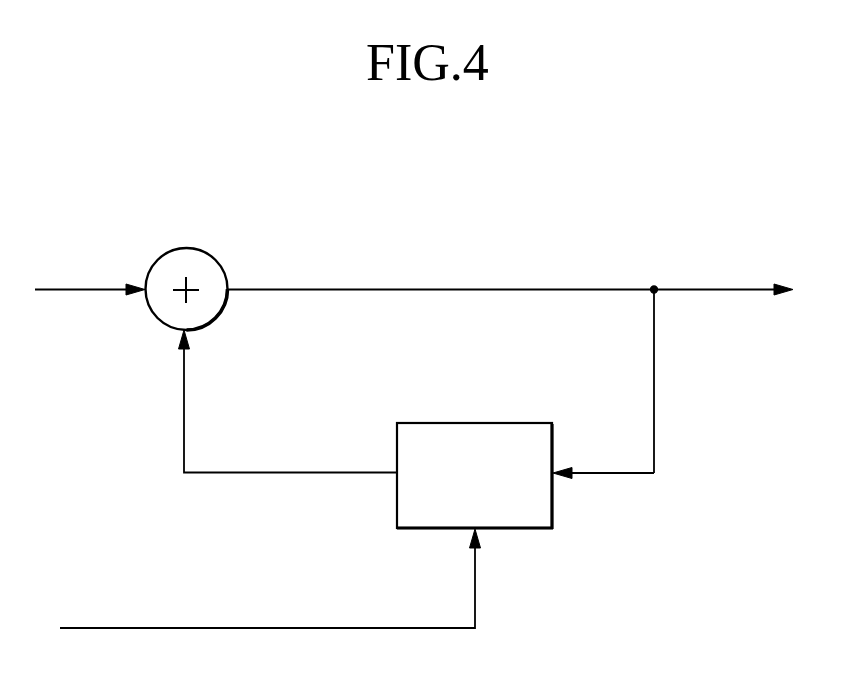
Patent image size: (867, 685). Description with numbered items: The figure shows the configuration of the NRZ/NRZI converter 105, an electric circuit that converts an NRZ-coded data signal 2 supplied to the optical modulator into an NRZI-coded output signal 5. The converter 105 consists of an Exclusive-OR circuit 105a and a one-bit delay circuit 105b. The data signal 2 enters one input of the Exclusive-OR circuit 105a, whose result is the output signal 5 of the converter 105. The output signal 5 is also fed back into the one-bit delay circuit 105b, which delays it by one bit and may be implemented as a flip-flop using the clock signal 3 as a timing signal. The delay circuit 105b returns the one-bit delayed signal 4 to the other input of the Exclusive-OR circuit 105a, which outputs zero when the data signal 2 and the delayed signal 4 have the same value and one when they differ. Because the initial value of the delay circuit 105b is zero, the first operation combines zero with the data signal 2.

The NRZ/NRZI converter 105 is at (157, 178).
The Exclusive-OR circuit 105a is at (222, 263).
The 1-bit delay circuit 105b is at (478, 423).
The data signal 2 is at (82, 289).
The clock signal 3 is at (248, 628).
The 1-bit delayed signal 4 is at (283, 472).
The output signal 5 is at (713, 289).